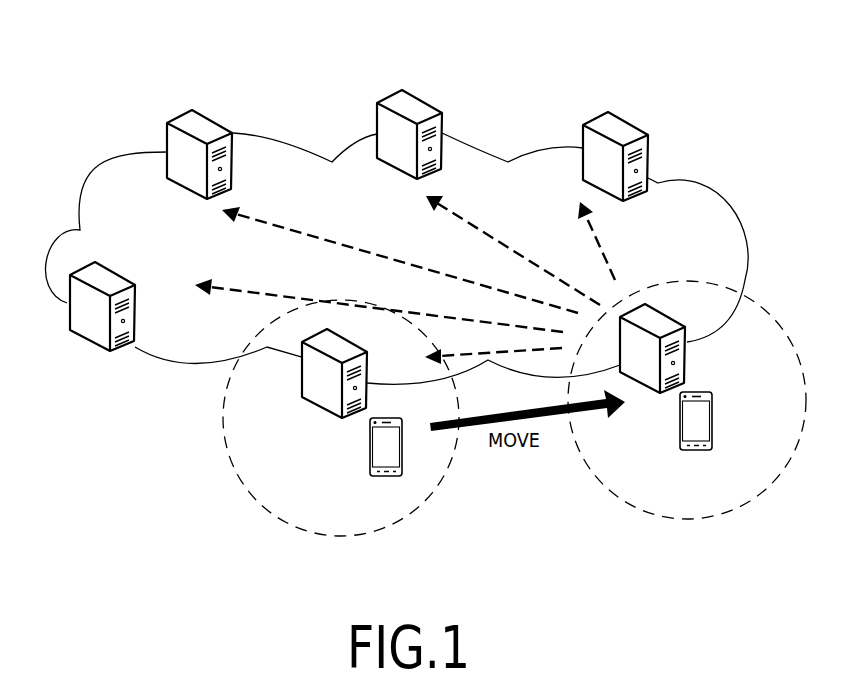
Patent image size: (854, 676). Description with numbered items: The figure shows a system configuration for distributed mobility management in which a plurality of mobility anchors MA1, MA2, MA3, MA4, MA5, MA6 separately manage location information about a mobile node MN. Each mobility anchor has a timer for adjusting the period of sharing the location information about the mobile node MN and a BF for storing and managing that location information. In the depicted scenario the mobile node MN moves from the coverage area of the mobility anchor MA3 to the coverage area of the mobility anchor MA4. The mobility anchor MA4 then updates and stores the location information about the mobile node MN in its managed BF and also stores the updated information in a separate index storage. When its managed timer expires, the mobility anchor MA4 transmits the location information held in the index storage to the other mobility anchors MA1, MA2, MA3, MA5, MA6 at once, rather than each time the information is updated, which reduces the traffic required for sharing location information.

The mobility anchor MA1 is at (177, 154).
The mobility anchor MA2 is at (124, 306).
The mobility anchor MA3 is at (356, 373).
The mobility anchor MA4 is at (676, 348).
The mobility anchor MA5 is at (641, 156).
The mobility anchor MA6 is at (433, 134).
The mobile node MN is at (541, 448).